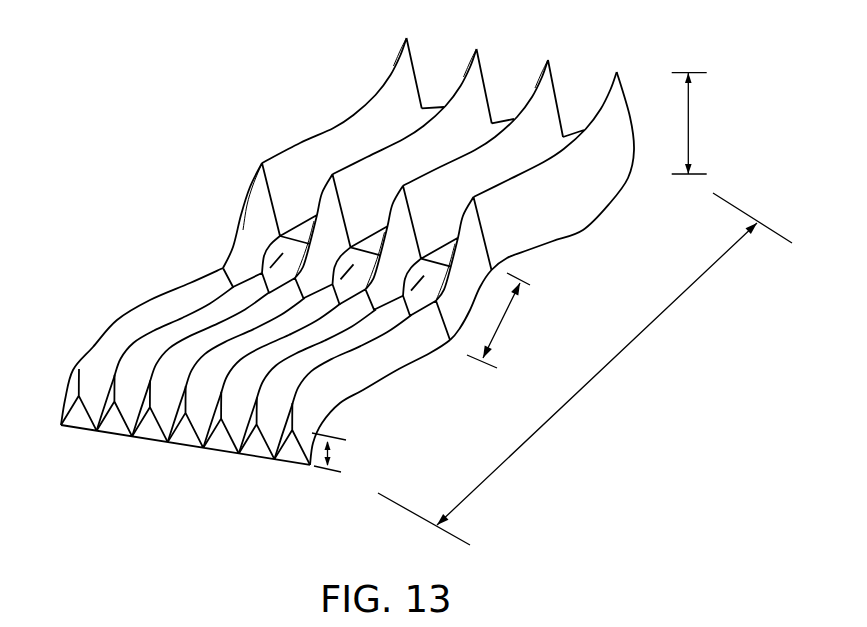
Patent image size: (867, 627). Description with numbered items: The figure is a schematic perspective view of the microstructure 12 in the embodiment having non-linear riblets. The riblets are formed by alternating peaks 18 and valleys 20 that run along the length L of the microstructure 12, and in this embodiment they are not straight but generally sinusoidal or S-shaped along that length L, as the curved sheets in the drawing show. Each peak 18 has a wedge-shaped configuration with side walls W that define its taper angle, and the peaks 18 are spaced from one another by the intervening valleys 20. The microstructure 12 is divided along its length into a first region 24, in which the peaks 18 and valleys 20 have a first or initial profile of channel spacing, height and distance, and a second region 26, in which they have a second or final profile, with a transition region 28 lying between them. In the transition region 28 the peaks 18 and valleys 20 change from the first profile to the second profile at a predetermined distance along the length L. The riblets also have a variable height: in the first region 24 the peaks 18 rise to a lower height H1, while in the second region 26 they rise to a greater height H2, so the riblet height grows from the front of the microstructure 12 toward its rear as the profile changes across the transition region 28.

The microstructure 12 is at (126, 156).
The peaks 18 is at (180, 317).
The valleys 20 is at (90, 372).
The first region 24 is at (366, 399).
The second region 26 is at (584, 230).
The transition region 28 is at (503, 323).
The side walls W is at (117, 348).
The first pleat height H1 is at (332, 458).
The second pleat height H2 is at (703, 123).
The length L is at (585, 369).